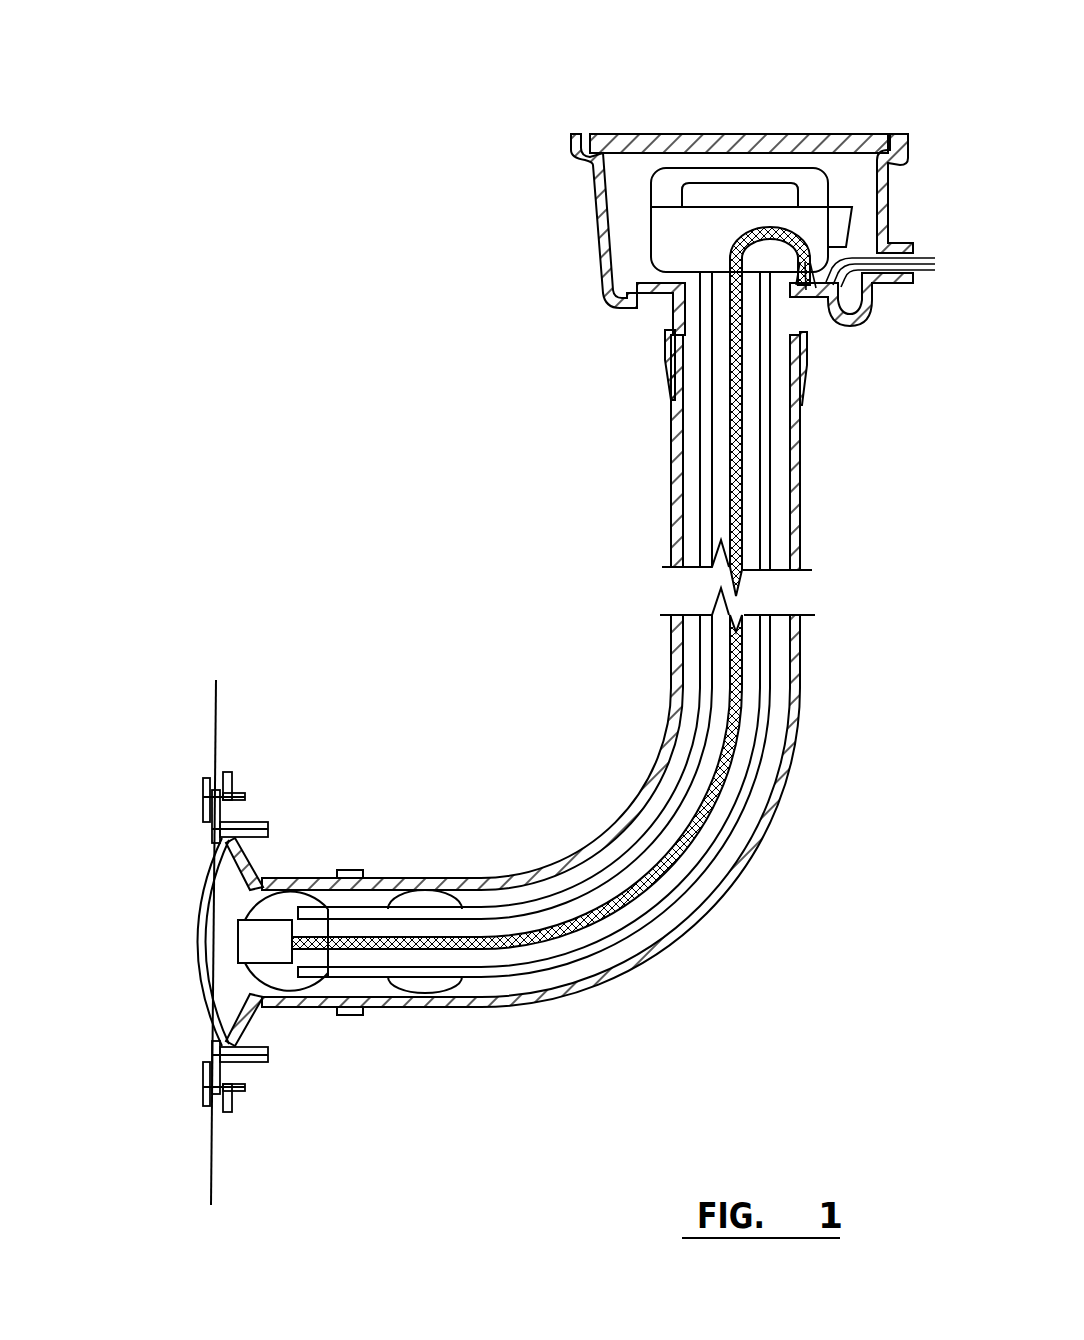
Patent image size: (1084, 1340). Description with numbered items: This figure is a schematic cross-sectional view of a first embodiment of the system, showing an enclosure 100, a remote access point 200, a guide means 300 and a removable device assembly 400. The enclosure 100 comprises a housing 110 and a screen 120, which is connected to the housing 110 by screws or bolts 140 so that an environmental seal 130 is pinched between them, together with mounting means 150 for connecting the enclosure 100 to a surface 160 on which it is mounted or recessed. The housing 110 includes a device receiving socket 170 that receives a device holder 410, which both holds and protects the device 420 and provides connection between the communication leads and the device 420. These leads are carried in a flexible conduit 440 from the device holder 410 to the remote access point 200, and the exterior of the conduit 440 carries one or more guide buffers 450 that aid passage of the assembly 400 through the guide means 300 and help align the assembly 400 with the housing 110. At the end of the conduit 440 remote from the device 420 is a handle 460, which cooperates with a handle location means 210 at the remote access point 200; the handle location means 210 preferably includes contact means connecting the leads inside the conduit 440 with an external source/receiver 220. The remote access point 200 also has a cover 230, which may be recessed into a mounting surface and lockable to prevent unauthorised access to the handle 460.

The enclosure 100 is at (233, 955).
The housing 110 is at (268, 858).
The screen 120 is at (240, 912).
The environmental seal 130 is at (270, 1034).
The screws or bolts 140 is at (197, 830).
The mounting means 150 is at (198, 1085).
The surface 160 is at (210, 1160).
The device receiving socket 170 is at (303, 877).
The remote access point 200 is at (893, 225).
The handle location means 210 is at (840, 260).
The external source/receiver 220 is at (936, 285).
The cover 230 is at (745, 145).
The guide means 300 is at (712, 905).
The removable device assembly 400 is at (380, 1008).
The device holder 410 is at (297, 993).
The device 420 is at (238, 938).
The flexible conduit 440 is at (568, 930).
The guide buffer 450 is at (425, 903).
The handle 460 is at (677, 237).